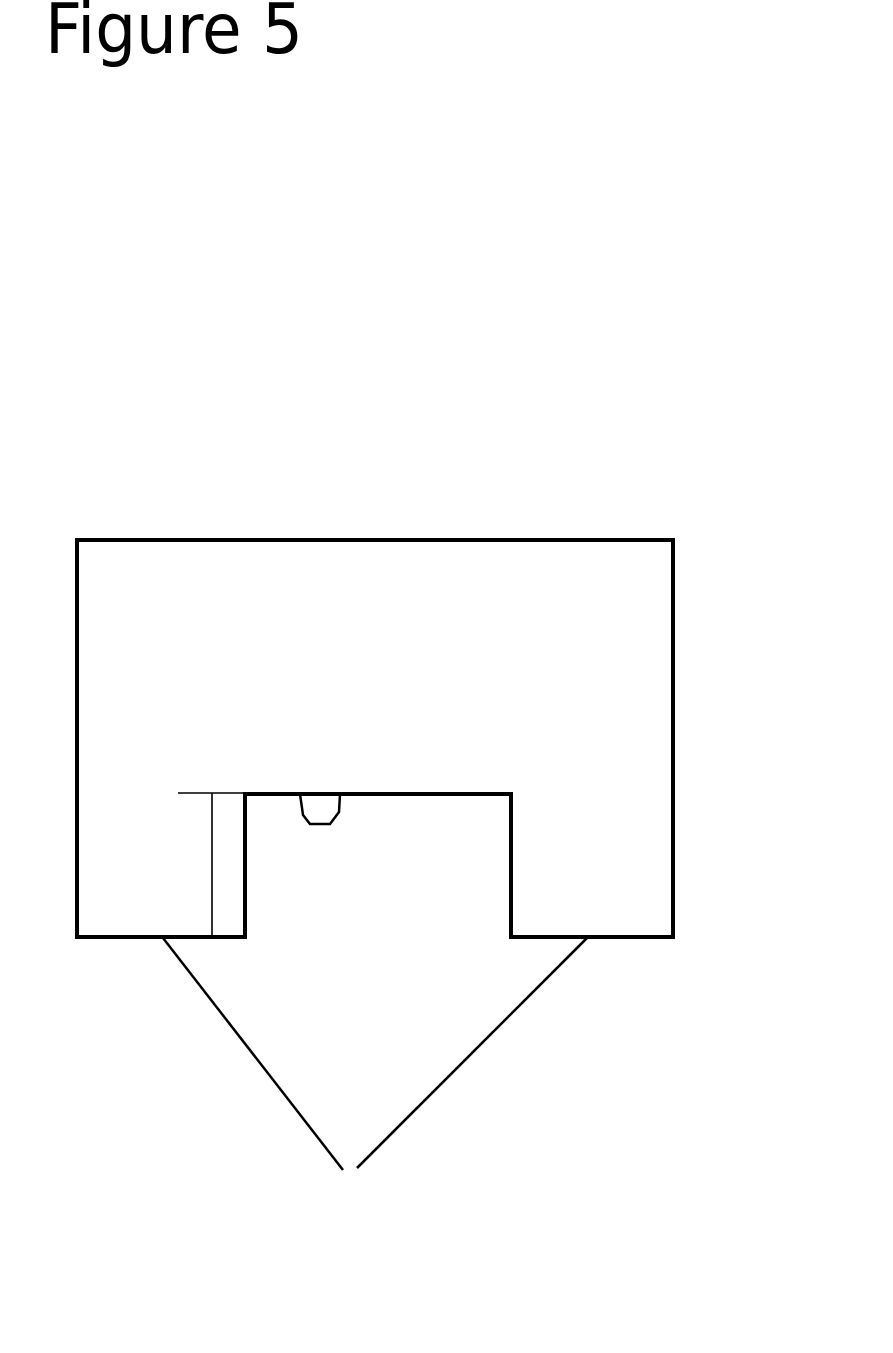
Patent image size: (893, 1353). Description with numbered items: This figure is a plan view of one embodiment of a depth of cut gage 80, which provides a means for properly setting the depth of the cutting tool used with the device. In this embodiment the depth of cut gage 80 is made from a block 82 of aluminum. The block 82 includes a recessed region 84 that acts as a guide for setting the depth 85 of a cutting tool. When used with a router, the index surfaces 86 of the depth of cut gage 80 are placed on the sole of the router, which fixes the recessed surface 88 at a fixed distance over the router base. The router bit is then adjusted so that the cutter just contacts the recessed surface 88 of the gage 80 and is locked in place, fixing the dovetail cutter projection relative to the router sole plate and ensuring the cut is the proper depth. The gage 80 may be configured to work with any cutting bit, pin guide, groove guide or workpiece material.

The depth of cut gage 80 is at (285, 538).
The block 82 is at (605, 673).
The recessed region 84 is at (390, 808).
The depth 85 is at (205, 870).
The index surfaces 86 is at (375, 1113).
The recessed surface 88 is at (300, 793).